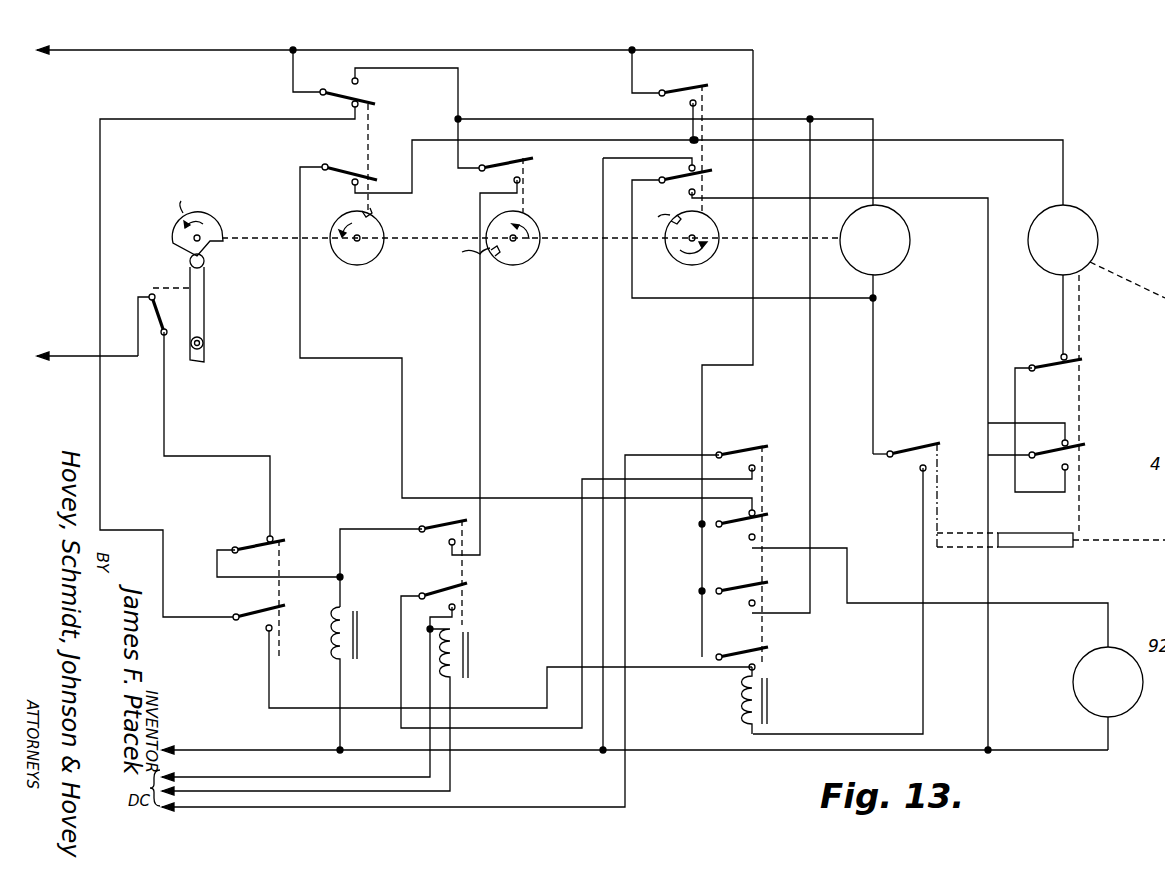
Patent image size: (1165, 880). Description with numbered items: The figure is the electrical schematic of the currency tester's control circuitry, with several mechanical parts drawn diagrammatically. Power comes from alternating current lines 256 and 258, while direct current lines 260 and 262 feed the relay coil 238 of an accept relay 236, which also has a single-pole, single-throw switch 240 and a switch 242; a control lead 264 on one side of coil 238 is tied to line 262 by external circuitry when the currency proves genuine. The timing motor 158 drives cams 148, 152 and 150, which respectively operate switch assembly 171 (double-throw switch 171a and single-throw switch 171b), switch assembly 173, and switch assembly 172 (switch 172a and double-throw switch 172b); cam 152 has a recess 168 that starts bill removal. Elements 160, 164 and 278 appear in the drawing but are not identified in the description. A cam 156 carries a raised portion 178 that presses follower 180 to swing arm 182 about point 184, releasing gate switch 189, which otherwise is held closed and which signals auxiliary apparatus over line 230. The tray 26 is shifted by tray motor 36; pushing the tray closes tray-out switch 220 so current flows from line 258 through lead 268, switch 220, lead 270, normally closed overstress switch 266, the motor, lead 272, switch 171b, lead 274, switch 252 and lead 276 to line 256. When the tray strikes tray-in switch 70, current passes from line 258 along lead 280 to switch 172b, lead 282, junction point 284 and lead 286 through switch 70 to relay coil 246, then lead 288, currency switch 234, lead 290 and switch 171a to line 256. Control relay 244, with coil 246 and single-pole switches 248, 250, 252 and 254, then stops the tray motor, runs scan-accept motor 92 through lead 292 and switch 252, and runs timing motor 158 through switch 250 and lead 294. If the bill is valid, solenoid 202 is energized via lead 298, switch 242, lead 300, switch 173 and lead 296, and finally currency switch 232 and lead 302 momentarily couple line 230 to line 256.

The alternating current line 256 is at (100, 53).
The single-pole, double-throw switch 171a is at (350, 102).
The switch assembly 171 is at (372, 97).
The single-pole, single-throw switch 171b is at (357, 173).
The lead 296 is at (512, 119).
The cam 156 is at (220, 214).
The raised portion 178 is at (194, 195).
The follower 180 is at (207, 260).
The arm 182 is at (205, 281).
The point 184 is at (205, 340).
The gate switch 189 is at (148, 292).
The line 230 is at (78, 355).
The cam 148 is at (357, 266).
The shaft 160 is at (364, 212).
The switch assembly 173 is at (533, 163).
The cam 152 is at (513, 266).
The recess 168 is at (463, 258).
The single-pole, single-throw switch 172a is at (675, 104).
The switch assembly 172 is at (735, 86).
The single-pole, double-throw switch 172b is at (689, 194).
The cam 150 is at (692, 266).
The notch 164 is at (652, 216).
The timing motor 158 is at (893, 270).
The junction point 284 is at (878, 298).
The lead 282 is at (708, 298).
The tray motor 36 is at (1095, 227).
The lead 272 is at (952, 140).
The overstress switch 266 is at (1082, 365).
The lead 270 is at (1017, 402).
The tray-out switch 220 is at (1078, 438).
The lead 268 is at (990, 640).
The tray-in switch 70 is at (918, 440).
The tray 26 is at (1045, 548).
The lead 286 is at (875, 388).
The lead 294 is at (812, 350).
The lead 292 is at (870, 603).
The lead 276 is at (702, 395).
The lead 280 is at (603, 375).
The single-pole switch 254 is at (735, 452).
The direct current line 262 is at (340, 808).
The single-pole switch 252 is at (722, 522).
The single-pole switch 250 is at (734, 588).
The single-pole switch 248 is at (734, 654).
The control relay 244 is at (766, 664).
The relay coil 246 is at (770, 702).
The lead 288 is at (655, 667).
The lead 274 is at (355, 358).
The lead 300 is at (482, 360).
The single-pole, single-throw switch 242 is at (451, 524).
The lead 298 is at (340, 530).
The single-pole, single-throw switch 240 is at (448, 588).
The accept relay 236 is at (466, 622).
The relay coil 238 is at (470, 650).
The currency-responsive switch 232 is at (247, 546).
The currency-responsive switch 234 is at (253, 630).
The relay armature 278 is at (285, 648).
The solenoid 202 is at (335, 655).
The lead 302 is at (165, 405).
The lead 290 is at (102, 492).
The alternating current line 258 is at (232, 748).
The control lead 264 is at (238, 777).
The direct current line 260 is at (298, 790).
The scan-accept motor 92 is at (1152, 656).